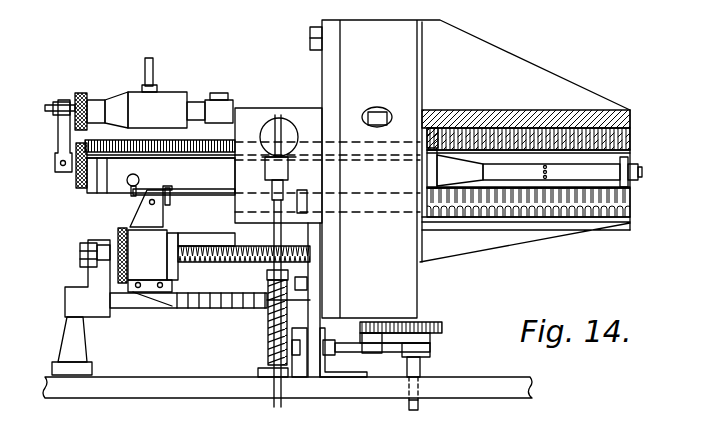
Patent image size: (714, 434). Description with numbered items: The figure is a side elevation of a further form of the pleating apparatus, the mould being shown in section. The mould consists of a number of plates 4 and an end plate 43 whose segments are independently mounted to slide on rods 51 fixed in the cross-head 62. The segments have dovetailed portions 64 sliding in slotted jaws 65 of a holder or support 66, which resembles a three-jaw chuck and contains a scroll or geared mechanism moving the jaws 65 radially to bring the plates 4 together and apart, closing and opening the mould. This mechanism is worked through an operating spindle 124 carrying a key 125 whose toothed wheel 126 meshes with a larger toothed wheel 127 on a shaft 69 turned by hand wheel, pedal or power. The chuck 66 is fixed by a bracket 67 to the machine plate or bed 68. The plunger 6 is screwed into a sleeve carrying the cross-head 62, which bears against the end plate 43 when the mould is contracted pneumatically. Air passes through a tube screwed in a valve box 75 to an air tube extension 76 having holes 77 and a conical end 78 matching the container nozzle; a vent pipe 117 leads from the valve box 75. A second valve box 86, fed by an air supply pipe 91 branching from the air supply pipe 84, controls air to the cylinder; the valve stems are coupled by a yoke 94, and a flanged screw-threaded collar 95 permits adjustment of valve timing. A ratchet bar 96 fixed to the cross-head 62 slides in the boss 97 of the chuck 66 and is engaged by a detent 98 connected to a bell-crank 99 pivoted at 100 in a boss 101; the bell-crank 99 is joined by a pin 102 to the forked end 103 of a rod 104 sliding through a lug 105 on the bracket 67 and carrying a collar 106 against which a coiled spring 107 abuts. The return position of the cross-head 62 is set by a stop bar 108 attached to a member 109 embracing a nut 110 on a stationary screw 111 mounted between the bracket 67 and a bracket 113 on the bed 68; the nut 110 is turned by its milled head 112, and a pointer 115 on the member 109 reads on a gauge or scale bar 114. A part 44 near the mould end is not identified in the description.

The plates 4 is at (493, 130).
The plunger 6 is at (420, 200).
The end plate 43 is at (440, 128).
The spindle flange 44 is at (623, 190).
The rod 51 is at (606, 127).
The cross-head 62 is at (416, 228).
The dovetailed portions 64 is at (578, 110).
The jaws 65 is at (537, 66).
The holder or support 66 is at (410, 277).
The bracket 67 is at (313, 298).
The machine plate or bed 68 is at (478, 388).
The shaft 69 is at (419, 403).
The valve box 75 is at (127, 163).
The air tube extension 76 is at (570, 183).
The holes 77 is at (540, 182).
The conical end 78 is at (582, 175).
The air supply pipe 84 is at (130, 184).
The valve box 86 is at (118, 100).
The air supply pipe 91 is at (148, 58).
The yoke 94 is at (58, 140).
The flanged screw-threaded collar 95 is at (62, 93).
The ratchet bar 96 is at (207, 108).
The boss 97 is at (243, 108).
The detent 98 is at (284, 120).
The bell-crank 99 is at (276, 115).
The pivot 100 is at (266, 166).
The boss 101 is at (312, 163).
The pin 102 is at (288, 163).
The forked end 103 is at (290, 180).
The rod 104 is at (272, 407).
The lug 105 is at (267, 364).
The collar 106 is at (283, 277).
The coiled spring 107 is at (268, 336).
The stop bar 108 is at (235, 223).
The member 109 is at (147, 217).
The nut 110 is at (172, 275).
The stationary screw 111 is at (205, 262).
The milled head 112 is at (97, 252).
The bracket 113 is at (88, 280).
The gauge or scale bar 114 is at (200, 308).
The pointer 115 is at (147, 293).
The vent pipe 117 is at (170, 204).
The operating spindle 124 is at (380, 110).
The key 125 is at (373, 353).
The toothed wheel 126 is at (382, 323).
The larger toothed wheel 127 is at (442, 323).